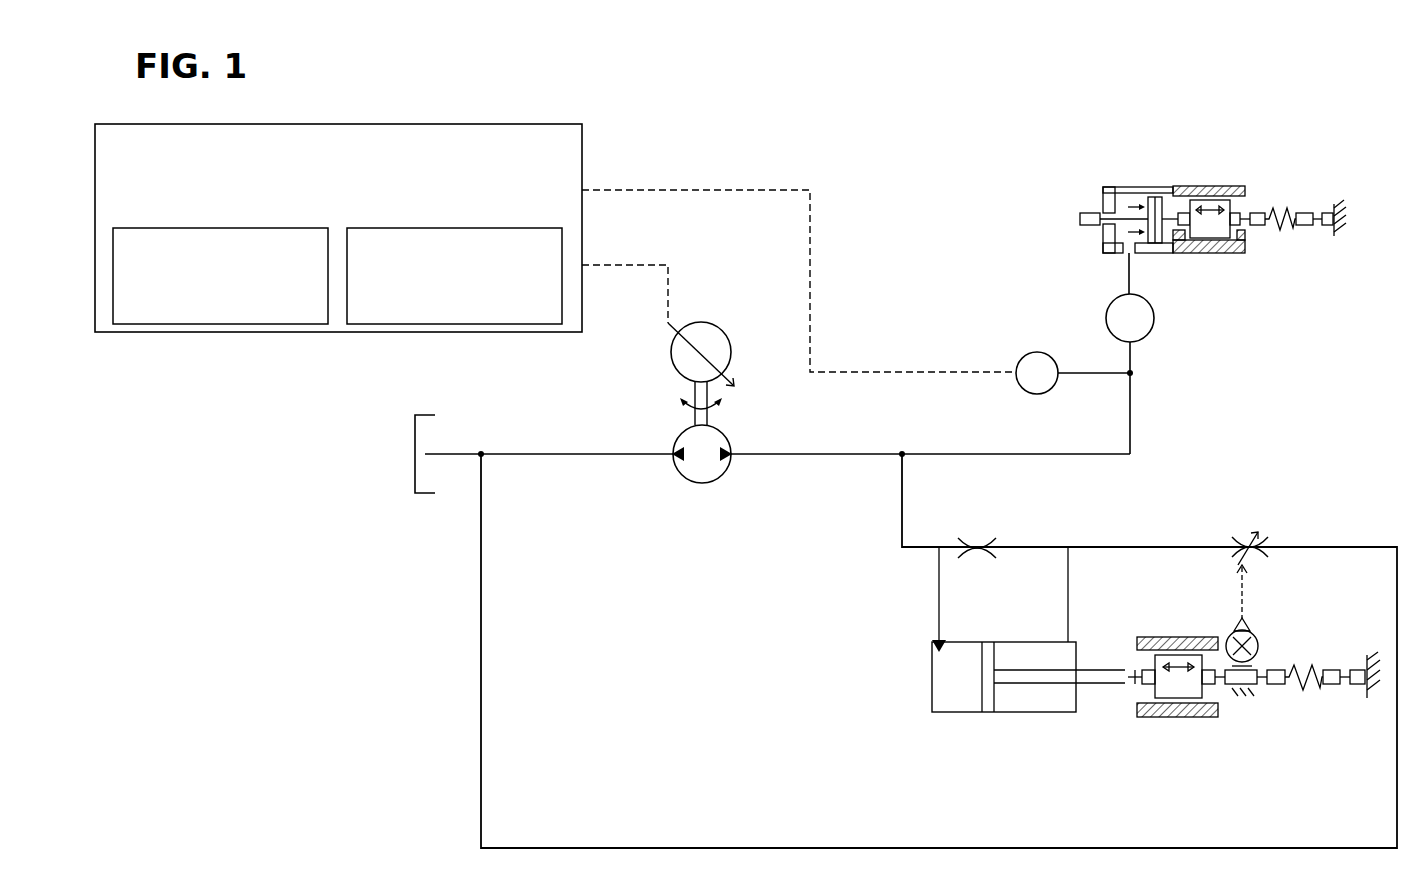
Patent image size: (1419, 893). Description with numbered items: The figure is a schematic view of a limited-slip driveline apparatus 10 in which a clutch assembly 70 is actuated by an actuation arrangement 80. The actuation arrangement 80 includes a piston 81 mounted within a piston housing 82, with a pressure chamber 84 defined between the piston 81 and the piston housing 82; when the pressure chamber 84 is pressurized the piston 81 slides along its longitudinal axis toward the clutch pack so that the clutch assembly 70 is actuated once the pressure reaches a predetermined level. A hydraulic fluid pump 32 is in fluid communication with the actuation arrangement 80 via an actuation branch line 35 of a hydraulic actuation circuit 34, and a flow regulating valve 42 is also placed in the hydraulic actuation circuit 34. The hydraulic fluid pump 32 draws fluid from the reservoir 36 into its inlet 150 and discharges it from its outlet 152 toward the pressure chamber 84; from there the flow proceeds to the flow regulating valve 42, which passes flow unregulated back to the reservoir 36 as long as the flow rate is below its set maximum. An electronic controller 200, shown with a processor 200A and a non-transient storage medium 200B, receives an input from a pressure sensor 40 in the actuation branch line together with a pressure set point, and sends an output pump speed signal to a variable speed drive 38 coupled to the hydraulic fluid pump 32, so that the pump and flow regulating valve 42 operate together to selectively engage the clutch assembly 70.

The limited-slip driveline apparatus 10 is at (740, 78).
The electronic controller 200 is at (467, 124).
The processor 200A is at (454, 276).
The non-transient storage medium 200B is at (220, 276).
The variable speed drive 38 is at (718, 327).
The hydraulic fluid pump 32 is at (673, 443).
The inlet 150 is at (670, 456).
The outlet 152 is at (734, 456).
The reservoir 36 is at (415, 434).
The pressure sensor 40 is at (1022, 357).
The actuation branch line 35 is at (1133, 400).
The hydraulic actuation circuit 34 is at (1315, 547).
The actuation arrangement 80 is at (1113, 190).
The piston 81 is at (1146, 220).
The piston housing 82 is at (1113, 240).
The pressure chamber 84 is at (1123, 200).
The clutch assembly 70 is at (1207, 245).
The flow regulating valve 42 is at (1147, 717).